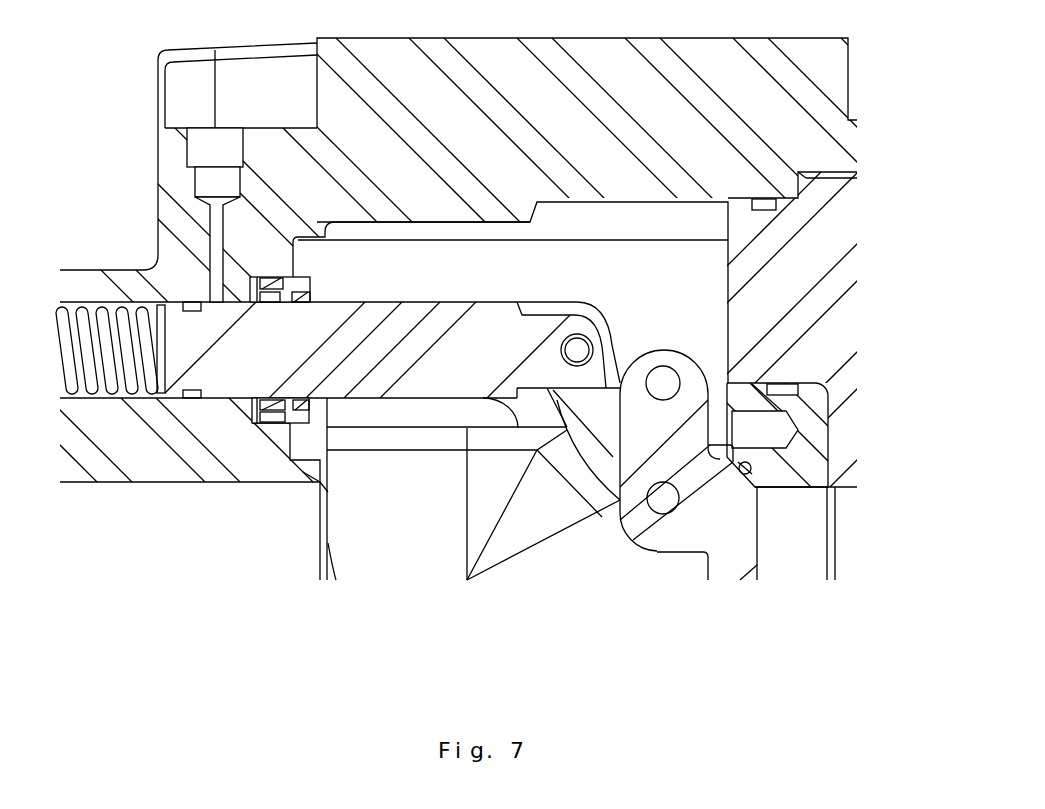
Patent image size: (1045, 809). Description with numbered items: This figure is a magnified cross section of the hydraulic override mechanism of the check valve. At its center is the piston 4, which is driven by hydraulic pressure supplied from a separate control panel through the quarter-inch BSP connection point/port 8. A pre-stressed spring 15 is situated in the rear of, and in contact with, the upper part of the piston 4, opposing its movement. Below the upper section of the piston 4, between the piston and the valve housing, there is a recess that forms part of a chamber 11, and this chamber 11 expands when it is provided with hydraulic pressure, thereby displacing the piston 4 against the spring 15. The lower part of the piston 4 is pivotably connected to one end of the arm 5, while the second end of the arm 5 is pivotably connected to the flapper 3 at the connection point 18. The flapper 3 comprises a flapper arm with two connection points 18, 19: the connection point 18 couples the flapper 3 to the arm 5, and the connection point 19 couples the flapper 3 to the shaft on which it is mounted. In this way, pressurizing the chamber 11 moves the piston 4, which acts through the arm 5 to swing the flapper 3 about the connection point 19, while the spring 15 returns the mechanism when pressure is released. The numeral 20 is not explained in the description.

The flapper 3 is at (665, 552).
The piston 4 is at (393, 365).
The arm 5 is at (585, 428).
The connection point/port 8 is at (213, 157).
The chamber 11 is at (233, 297).
The pre-stressed spring 15 is at (97, 367).
The connection point 18 is at (667, 500).
The connection point 19 is at (668, 383).
The sleeve 20 is at (232, 392).